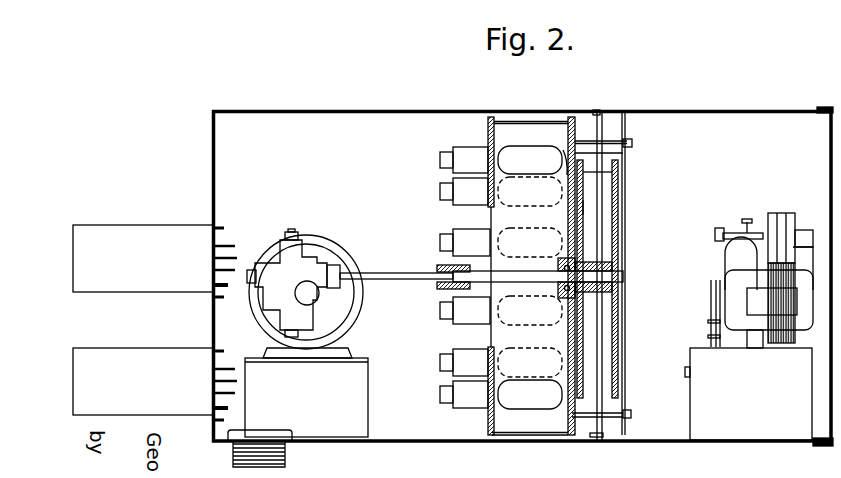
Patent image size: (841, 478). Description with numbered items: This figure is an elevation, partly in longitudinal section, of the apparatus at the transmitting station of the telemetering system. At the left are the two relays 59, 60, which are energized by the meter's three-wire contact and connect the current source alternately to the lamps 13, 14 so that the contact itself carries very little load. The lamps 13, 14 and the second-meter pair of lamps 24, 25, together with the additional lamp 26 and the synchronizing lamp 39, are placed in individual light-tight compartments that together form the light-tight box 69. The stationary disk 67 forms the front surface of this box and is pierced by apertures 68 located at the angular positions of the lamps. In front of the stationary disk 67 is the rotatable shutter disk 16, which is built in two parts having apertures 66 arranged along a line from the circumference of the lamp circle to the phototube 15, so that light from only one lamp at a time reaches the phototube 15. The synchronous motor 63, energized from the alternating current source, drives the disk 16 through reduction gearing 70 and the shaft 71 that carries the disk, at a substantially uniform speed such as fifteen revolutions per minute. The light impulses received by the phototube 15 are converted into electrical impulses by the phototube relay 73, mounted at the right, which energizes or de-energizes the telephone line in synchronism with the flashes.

The lamp 13 is at (501, 191).
The lamp 14 is at (501, 310).
The photoelectric device or tube 15 is at (737, 258).
The rotatable disk 16 is at (613, 172).
The lamp 24 is at (501, 242).
The lamp 25 is at (501, 362).
The lamp 26 is at (735, 282).
The synchronizing lamp 39 is at (735, 280).
The relay 59 is at (162, 233).
The relay 60 is at (162, 353).
The synchronous motor 63 is at (350, 253).
The apertures 66 is at (578, 195).
The stationary disk 67 is at (575, 127).
The apertures 68 is at (567, 175).
The light-tight box 69 is at (512, 131).
The reduction gearing 70 is at (302, 262).
The shaft 71 is at (393, 276).
The phototube relay 73 is at (748, 394).